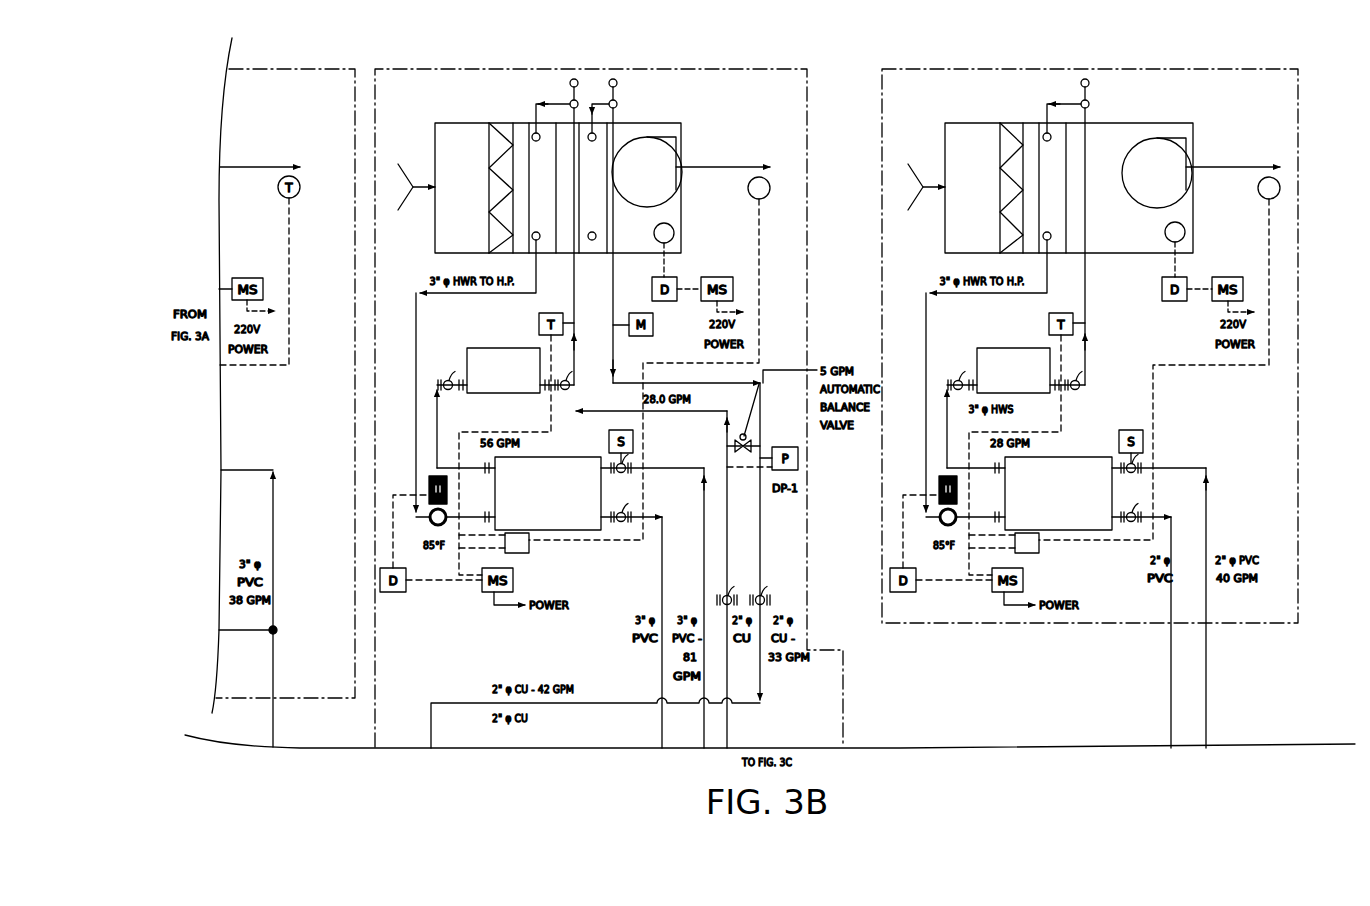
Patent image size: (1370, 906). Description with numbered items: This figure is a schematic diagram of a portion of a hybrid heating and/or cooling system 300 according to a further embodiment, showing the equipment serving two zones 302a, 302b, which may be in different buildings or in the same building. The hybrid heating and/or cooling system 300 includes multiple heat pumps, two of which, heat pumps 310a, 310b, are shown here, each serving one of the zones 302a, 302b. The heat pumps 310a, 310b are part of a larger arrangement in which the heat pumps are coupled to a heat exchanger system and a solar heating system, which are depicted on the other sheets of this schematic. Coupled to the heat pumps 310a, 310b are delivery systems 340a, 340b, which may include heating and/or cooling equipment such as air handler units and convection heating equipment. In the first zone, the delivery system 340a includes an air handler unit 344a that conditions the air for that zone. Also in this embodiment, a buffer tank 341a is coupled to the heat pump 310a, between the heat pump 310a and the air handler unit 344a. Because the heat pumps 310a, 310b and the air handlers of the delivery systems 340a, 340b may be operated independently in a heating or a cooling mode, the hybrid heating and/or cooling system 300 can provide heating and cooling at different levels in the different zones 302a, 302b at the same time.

The hybrid heating and/or cooling system 300 is at (1321, 108).
The zone 302a is at (523, 68).
The zone 302b is at (1040, 68).
The delivery system 340a is at (408, 83).
The delivery system 340b is at (930, 83).
The air handler unit 344a is at (445, 148).
The buffer tank 341a is at (472, 362).
The heat pump 310a is at (562, 456).
The heat pump 310b is at (1082, 456).